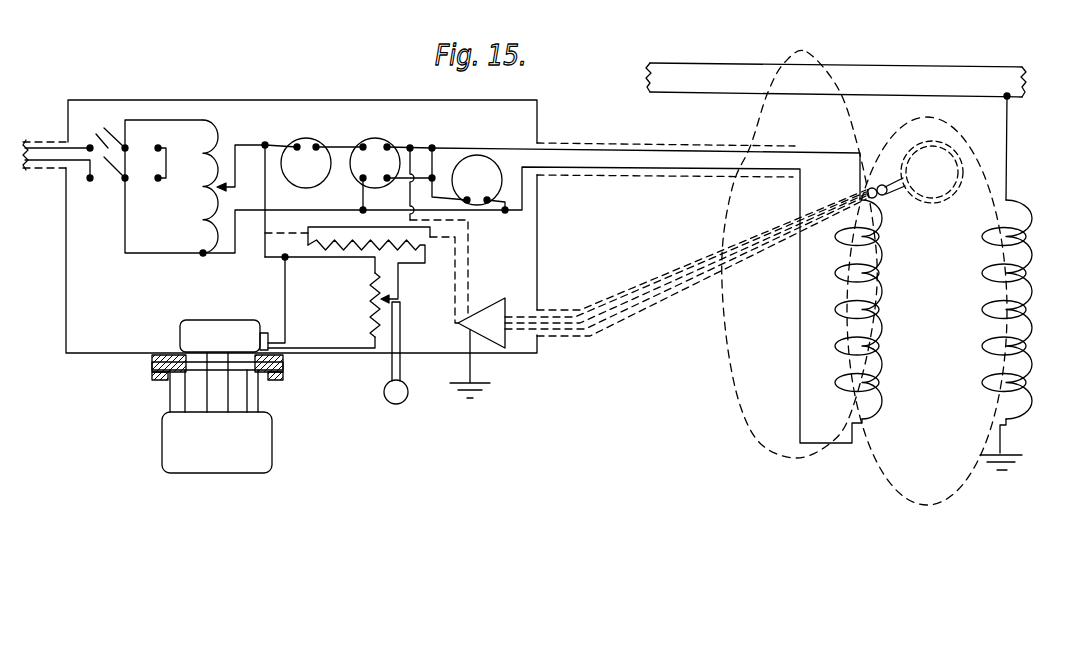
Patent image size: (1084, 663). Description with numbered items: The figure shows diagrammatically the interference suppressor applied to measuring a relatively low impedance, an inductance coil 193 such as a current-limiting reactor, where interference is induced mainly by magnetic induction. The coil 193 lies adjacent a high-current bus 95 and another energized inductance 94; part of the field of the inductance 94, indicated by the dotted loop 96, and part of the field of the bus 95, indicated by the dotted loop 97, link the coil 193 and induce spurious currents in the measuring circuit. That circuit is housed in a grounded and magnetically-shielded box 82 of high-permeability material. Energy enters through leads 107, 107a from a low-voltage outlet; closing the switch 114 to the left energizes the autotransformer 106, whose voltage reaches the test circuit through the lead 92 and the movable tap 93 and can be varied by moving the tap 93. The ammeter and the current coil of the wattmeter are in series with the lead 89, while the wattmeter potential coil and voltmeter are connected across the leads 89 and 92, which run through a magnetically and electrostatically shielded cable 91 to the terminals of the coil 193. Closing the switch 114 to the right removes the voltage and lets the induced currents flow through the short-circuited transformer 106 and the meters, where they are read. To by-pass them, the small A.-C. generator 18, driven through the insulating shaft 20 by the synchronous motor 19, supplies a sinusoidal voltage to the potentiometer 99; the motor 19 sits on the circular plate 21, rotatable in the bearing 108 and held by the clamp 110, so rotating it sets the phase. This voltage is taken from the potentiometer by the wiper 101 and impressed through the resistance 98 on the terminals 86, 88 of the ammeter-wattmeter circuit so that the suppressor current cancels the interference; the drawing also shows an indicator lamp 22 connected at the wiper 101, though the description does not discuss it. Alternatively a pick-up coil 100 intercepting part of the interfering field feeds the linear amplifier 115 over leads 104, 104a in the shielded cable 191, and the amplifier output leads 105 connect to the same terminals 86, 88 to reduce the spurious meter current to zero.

The grounded and magnetically-shielded box 82 is at (346, 101).
The terminal 86 is at (268, 143).
The terminal 88 is at (413, 146).
The lead 89 is at (622, 152).
The magnetically and electrostatically-shielded cable 91 is at (31, 141).
The lead 92 is at (208, 256).
The movable tap 93 is at (235, 183).
The energized inductance 94 is at (1033, 293).
The bus 95 is at (925, 80).
The dotted loop 96 is at (927, 311).
The dotted loop 97 is at (857, 129).
The resistance 98 is at (350, 249).
The potentiometer 99 is at (380, 300).
The pick-up coil 100 is at (932, 203).
The wiper 101 is at (398, 298).
The lead 104 is at (603, 318).
The lead 104a is at (638, 308).
The output leads 105 is at (470, 291).
The autotransformer 106 is at (220, 134).
The lead 107 is at (62, 162).
The lead 107a is at (68, 149).
The bearing 108 is at (285, 367).
The clamp 110 is at (284, 381).
The switch 114 is at (110, 178).
The linear amplifier 115 is at (501, 354).
The A.-C. generator 18 is at (238, 332).
The synchronous motor 19 is at (263, 434).
The insulating shaft 20 is at (222, 379).
The circular plate 21 is at (173, 374).
The lamp 22 is at (402, 364).
The shielded cable 191 is at (653, 281).
The inductance coil 193 is at (883, 288).